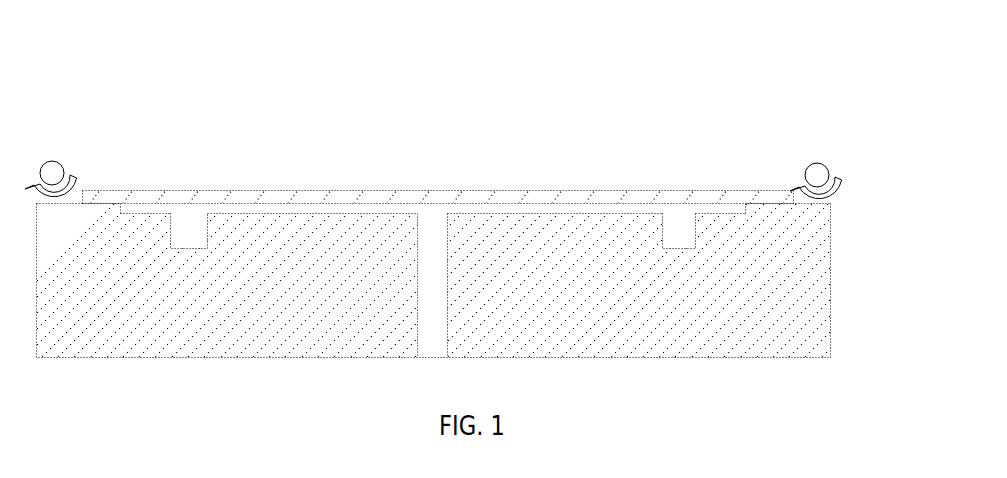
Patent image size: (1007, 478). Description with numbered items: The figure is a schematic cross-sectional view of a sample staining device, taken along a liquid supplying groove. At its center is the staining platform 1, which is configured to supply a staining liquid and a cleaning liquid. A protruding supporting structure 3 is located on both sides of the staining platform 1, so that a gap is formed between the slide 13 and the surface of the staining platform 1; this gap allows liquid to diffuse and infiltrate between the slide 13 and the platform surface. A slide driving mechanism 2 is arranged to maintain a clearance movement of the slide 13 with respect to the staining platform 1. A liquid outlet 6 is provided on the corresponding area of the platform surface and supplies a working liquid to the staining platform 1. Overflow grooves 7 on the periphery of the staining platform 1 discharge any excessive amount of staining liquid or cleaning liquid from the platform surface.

The staining platform 1 is at (361, 204).
The slide driving mechanism 2 is at (57, 165).
The supporting structure 3 is at (99, 202).
The liquid outlet 6 is at (445, 222).
The overflow groove 7 is at (203, 201).
The slide 13 is at (261, 176).